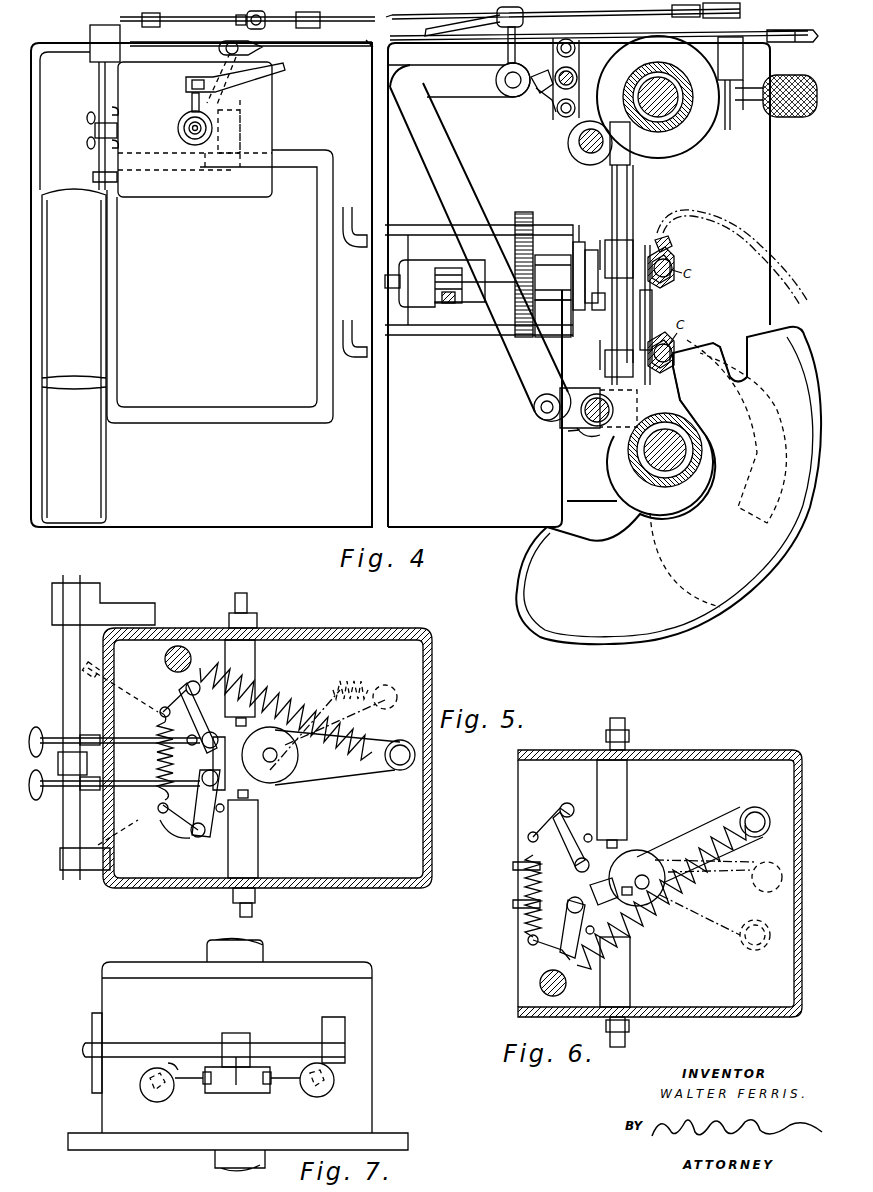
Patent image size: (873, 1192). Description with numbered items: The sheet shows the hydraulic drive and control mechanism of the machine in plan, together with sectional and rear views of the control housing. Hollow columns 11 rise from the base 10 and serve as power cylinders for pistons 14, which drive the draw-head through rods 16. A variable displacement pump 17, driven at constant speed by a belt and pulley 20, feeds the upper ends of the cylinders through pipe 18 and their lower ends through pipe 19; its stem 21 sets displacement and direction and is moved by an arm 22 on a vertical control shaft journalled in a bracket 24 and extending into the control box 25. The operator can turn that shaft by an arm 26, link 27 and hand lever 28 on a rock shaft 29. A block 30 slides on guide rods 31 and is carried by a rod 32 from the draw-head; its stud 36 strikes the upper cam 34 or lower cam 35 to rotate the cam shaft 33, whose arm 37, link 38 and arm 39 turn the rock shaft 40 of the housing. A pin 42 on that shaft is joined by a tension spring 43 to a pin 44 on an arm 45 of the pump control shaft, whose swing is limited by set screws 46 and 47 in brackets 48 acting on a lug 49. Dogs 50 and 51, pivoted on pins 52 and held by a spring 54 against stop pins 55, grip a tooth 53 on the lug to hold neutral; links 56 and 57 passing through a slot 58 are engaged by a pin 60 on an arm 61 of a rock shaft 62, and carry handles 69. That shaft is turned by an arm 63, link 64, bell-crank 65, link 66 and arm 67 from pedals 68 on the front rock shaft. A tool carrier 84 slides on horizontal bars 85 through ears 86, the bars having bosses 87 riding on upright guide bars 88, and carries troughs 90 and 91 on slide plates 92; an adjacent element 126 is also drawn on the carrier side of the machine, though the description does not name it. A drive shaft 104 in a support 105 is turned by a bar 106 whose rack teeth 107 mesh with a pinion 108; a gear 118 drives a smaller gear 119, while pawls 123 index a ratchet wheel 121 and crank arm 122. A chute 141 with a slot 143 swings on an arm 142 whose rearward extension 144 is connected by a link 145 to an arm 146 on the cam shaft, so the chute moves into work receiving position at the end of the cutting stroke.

In FIG. 4, the base 10 is at (194, 528).
In FIG. 4, the columns 11 is at (660, 60).
In FIG. 4, the pistons 14 is at (672, 80).
In FIG. 4, the rods 16 is at (676, 105).
In FIG. 4, the variable displacement pump 17 is at (270, 412).
In FIG. 4, the pipe 18 is at (360, 230).
In FIG. 4, the pipe 19 is at (352, 358).
In FIG. 4, the belt and pulley 20 is at (98, 357).
In FIG. 4, the stem 21 is at (242, 142).
In FIG. 4, the arm 22 is at (238, 104).
In FIG. 4, the bracket 24 is at (178, 133).
In FIG. 4, the control box or housing 25 is at (268, 118).
In FIG. 5, the control box or housing 25 is at (345, 628).
In FIG. 6, the control box or housing 25 is at (714, 752).
In FIG. 7, the control box or housing 25 is at (362, 986).
In FIG. 4, the arm 26 is at (224, 52).
In FIG. 4, the link 27 is at (345, 45).
In FIG. 4, the hand lever 28 is at (806, 41).
In FIG. 4, the rock shaft 29 is at (738, 26).
In FIG. 4, the block 30 is at (577, 70).
In FIG. 4, the guide rods 31 is at (572, 42).
In FIG. 4, the rod 32 is at (577, 84).
In FIG. 4, the cam shaft 33 is at (513, 88).
In FIG. 4, the upper cam 34 is at (540, 65).
In FIG. 4, the lower cam 35 is at (541, 92).
In FIG. 4, the stud 36 is at (554, 108).
In FIG. 4, the arm 37 is at (500, 49).
In FIG. 4, the link 38 is at (280, 70).
In FIG. 4, the arm 39 is at (191, 104).
In FIG. 4, the rock shaft 40 is at (195, 135).
In FIG. 5, the pin 42 is at (190, 657).
In FIG. 6, the pin 42 is at (540, 981).
In FIG. 5, the tension spring 43 is at (286, 693).
In FIG. 6, the tension spring 43 is at (690, 895).
In FIG. 5, the pin 44 is at (390, 705).
In FIG. 6, the pin 44 is at (761, 869).
In FIG. 5, the arm 45 is at (342, 770).
In FIG. 6, the arm 45 is at (694, 836).
In FIG. 5, the set screw 46 is at (252, 721).
In FIG. 6, the set screw 46 is at (618, 845).
In FIG. 5, the set screw 47 is at (250, 796).
In FIG. 6, the set screw 47 is at (626, 893).
In FIG. 5, the brackets 48 is at (255, 660).
In FIG. 6, the brackets 48 is at (627, 780).
In FIG. 5, the lug 49 is at (270, 755).
In FIG. 6, the lug 49 is at (637, 878).
In FIG. 5, the dog 50 is at (184, 683).
In FIG. 6, the dog 50 is at (573, 846).
In FIG. 5, the dog 51 is at (212, 828).
In FIG. 6, the dog 51 is at (570, 918).
In FIG. 5, the pins 52 is at (192, 835).
In FIG. 6, the pins 52 is at (567, 804).
In FIG. 5, the tooth 53 is at (212, 762).
In FIG. 6, the tooth 53 is at (600, 889).
In FIG. 5, the spring 54 is at (157, 760).
In FIG. 6, the spring 54 is at (525, 888).
In FIG. 5, the stop pins 55 is at (217, 761).
In FIG. 6, the stop pins 55 is at (590, 836).
In FIG. 4, the link 56 is at (125, 106).
In FIG. 5, the link 56 is at (130, 737).
In FIG. 6, the link 56 is at (520, 860).
In FIG. 4, the link 57 is at (125, 147).
In FIG. 5, the link 57 is at (130, 783).
In FIG. 6, the link 57 is at (520, 908).
In FIG. 5, the slot 58 is at (105, 735).
In FIG. 7, the slot 58 is at (192, 1080).
In FIG. 5, the pin 60 is at (80, 738).
In FIG. 7, the pin 60 is at (264, 1086).
In FIG. 4, the arm 61 is at (95, 131).
In FIG. 5, the arm 61 is at (62, 775).
In FIG. 7, the arm 61 is at (235, 1085).
In FIG. 4, the rock shaft 62 is at (99, 97).
In FIG. 5, the rock shaft 62 is at (63, 650).
In FIG. 7, the rock shaft 62 is at (283, 1043).
In FIG. 4, the arm 63 is at (126, 22).
In FIG. 4, the link 64 is at (217, 21).
In FIG. 4, the bell-crank 65 is at (270, 22).
In FIG. 4, the link 66 is at (398, 18).
In FIG. 4, the arm 67 is at (740, 9).
In FIG. 4, the pedals 68 is at (786, 117).
In FIG. 4, the handles 69 is at (87, 118).
In FIG. 5, the handles 69 is at (36, 727).
In FIG. 7, the handles 69 is at (150, 1096).
In FIG. 4, the carrier 84 is at (648, 245).
In FIG. 4, the horizontal bars 85 is at (612, 192).
In FIG. 4, the ears 86 is at (606, 245).
In FIG. 4, the bosses 87 is at (580, 160).
In FIG. 4, the upright guide bars 88 is at (592, 398).
In FIG. 4, the trough 90 is at (672, 367).
In FIG. 4, the trough 91 is at (672, 255).
In FIG. 4, the slide plate 92 is at (619, 308).
In FIG. 4, the drive shaft 104 is at (432, 280).
In FIG. 4, the support 105 is at (432, 337).
In FIG. 4, the bar 106 is at (452, 305).
In FIG. 4, the rack teeth 107 is at (440, 294).
In FIG. 4, the pinion 108 is at (448, 266).
In FIG. 4, the gear 118 is at (522, 212).
In FIG. 4, the gear 119 is at (548, 262).
In FIG. 4, the ratchet wheel 121 is at (598, 310).
In FIG. 4, the crank arm 122 is at (552, 338).
In FIG. 4, the pawls 123 is at (582, 225).
In FIG. 4, the bar 126 is at (654, 312).
In FIG. 4, the chute 141 is at (730, 245).
In FIG. 4, the arm 142 is at (683, 408).
In FIG. 4, the slot 143 is at (645, 255).
In FIG. 4, the rearward extension 144 is at (607, 440).
In FIG. 4, the link 145 is at (550, 420).
In FIG. 4, the arm 146 is at (518, 368).